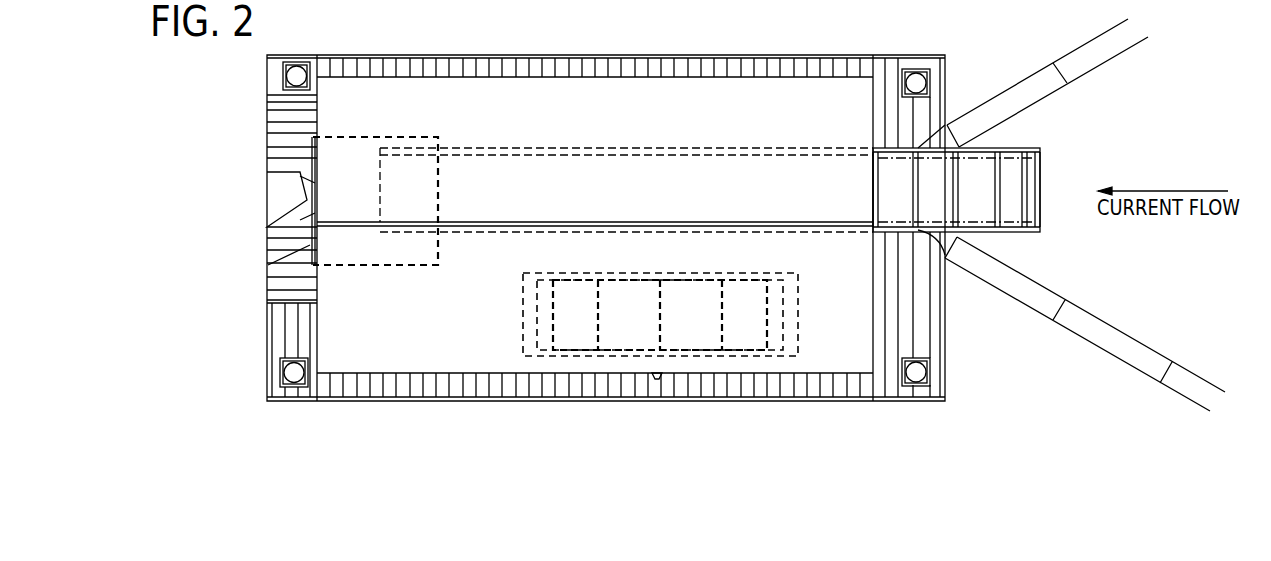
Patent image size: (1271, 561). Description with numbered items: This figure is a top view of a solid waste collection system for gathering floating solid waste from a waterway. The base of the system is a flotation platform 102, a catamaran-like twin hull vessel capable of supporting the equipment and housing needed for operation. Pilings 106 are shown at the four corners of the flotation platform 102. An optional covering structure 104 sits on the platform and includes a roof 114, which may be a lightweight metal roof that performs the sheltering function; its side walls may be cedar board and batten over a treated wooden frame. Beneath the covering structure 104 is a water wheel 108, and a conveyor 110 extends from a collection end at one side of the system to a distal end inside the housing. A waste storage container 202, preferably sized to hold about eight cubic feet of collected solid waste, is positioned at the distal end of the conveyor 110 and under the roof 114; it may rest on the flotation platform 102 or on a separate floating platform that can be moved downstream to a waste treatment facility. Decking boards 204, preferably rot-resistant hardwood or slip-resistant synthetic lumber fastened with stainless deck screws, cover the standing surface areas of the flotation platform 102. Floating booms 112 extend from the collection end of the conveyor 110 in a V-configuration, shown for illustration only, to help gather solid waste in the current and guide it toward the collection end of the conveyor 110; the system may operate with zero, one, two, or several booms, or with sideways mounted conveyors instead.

The flotation platform 102 is at (843, 400).
The covering structure 104 is at (370, 375).
The pilings 106 is at (283, 76).
The water wheel 108 is at (735, 278).
The conveyor 110 is at (1040, 172).
The floating booms 112 is at (1108, 63).
The roof 114 is at (415, 331).
The waste storage container 202 is at (268, 265).
The decking boards 204 is at (690, 390).